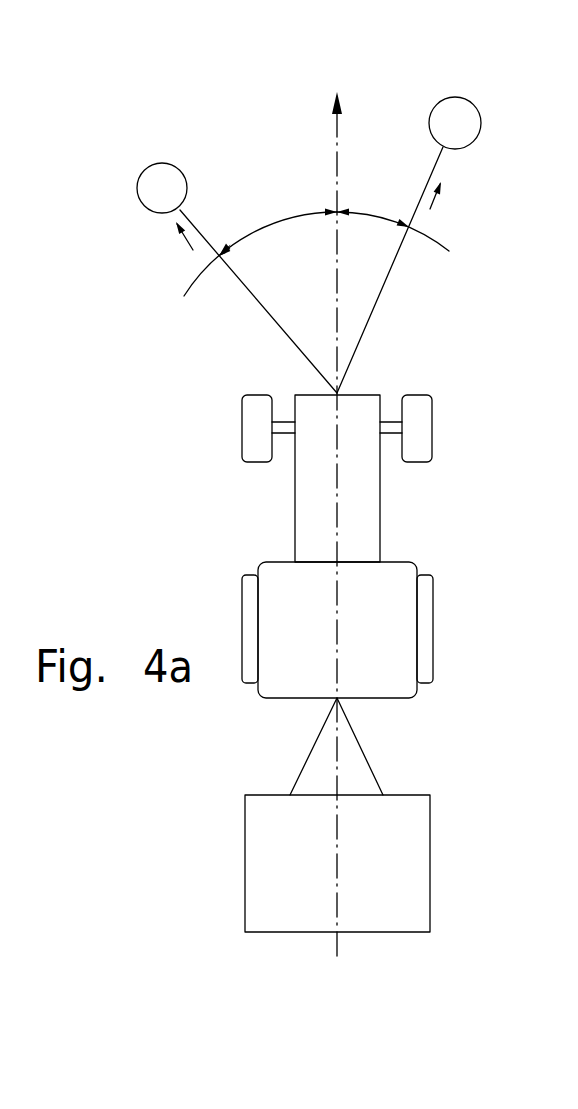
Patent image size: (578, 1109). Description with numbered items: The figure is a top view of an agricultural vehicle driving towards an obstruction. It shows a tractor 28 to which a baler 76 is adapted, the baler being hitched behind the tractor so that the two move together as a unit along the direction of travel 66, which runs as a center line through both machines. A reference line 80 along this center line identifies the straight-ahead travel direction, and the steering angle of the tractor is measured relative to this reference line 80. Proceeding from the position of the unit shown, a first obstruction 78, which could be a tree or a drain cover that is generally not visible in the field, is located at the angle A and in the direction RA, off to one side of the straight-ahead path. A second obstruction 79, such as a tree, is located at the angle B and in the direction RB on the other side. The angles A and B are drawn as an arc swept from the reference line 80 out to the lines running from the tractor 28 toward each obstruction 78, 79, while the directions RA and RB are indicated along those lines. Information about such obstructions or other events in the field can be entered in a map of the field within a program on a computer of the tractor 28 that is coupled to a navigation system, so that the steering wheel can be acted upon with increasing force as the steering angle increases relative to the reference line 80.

The tractor 28 is at (232, 528).
The baler 76 is at (215, 859).
The direction of travel 66 is at (336, 122).
The first obstruction 78 is at (162, 188).
The second obstruction 79 is at (455, 118).
The reference line 80 is at (335, 149).
The angle A is at (265, 226).
The angle B is at (373, 213).
The direction RA is at (193, 247).
The direction RB is at (430, 209).